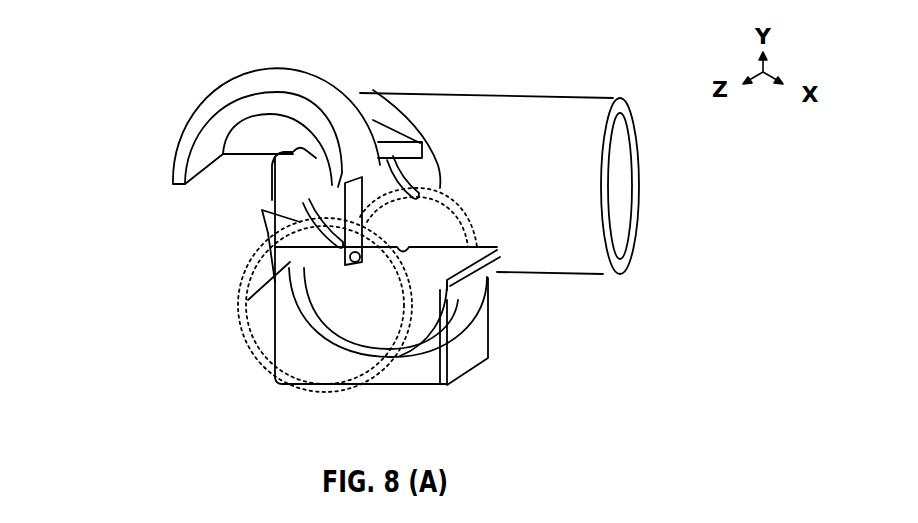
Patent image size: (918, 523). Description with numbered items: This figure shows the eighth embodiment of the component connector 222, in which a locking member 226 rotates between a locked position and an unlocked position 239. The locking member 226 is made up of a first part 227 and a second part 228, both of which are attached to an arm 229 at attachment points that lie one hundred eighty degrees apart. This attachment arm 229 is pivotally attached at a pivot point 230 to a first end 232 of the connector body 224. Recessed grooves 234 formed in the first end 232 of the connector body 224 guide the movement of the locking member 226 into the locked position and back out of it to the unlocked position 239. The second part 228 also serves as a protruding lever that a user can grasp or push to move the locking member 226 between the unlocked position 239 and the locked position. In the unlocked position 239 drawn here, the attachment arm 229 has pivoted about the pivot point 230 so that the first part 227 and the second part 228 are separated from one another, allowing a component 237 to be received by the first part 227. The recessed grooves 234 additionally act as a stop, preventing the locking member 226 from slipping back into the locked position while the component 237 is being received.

The connector 222 is at (602, 92).
The connector body 224 is at (560, 263).
The locking member 226 is at (340, 80).
The first part 227 is at (222, 104).
The second part 228 is at (408, 150).
The arm 229 is at (303, 201).
The pivot point 230 is at (345, 225).
The first end 232 is at (390, 394).
The recessed grooves 234 is at (364, 180).
The component 237 is at (291, 392).
The unlocked position 239 is at (234, 79).